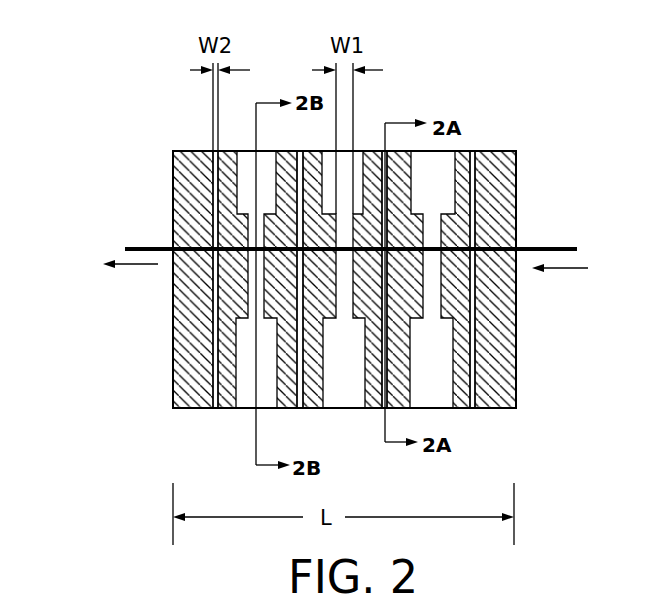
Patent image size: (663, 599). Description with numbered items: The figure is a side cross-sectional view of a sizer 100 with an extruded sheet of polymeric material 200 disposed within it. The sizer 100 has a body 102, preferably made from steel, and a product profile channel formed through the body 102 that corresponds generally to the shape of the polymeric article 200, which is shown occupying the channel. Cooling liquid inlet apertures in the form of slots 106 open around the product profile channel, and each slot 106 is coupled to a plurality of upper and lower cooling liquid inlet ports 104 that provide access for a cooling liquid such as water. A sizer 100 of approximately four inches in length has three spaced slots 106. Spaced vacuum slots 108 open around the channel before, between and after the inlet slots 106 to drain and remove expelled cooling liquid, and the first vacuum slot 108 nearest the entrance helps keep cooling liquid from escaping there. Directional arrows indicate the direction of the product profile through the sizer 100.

The sizer 100 is at (127, 188).
The body 102 is at (506, 176).
The cooling liquid inlet ports 104 is at (267, 164).
The cooling liquid inlet slots 106 is at (252, 307).
The vacuum slots 108 is at (212, 408).
The extruded sheet of polymeric material 200 is at (542, 250).